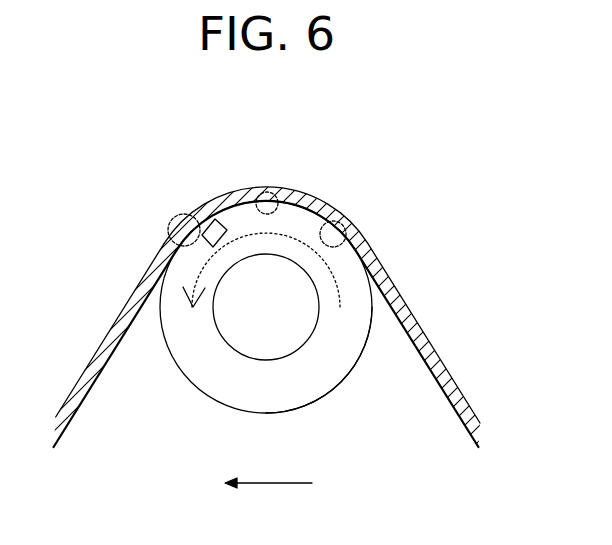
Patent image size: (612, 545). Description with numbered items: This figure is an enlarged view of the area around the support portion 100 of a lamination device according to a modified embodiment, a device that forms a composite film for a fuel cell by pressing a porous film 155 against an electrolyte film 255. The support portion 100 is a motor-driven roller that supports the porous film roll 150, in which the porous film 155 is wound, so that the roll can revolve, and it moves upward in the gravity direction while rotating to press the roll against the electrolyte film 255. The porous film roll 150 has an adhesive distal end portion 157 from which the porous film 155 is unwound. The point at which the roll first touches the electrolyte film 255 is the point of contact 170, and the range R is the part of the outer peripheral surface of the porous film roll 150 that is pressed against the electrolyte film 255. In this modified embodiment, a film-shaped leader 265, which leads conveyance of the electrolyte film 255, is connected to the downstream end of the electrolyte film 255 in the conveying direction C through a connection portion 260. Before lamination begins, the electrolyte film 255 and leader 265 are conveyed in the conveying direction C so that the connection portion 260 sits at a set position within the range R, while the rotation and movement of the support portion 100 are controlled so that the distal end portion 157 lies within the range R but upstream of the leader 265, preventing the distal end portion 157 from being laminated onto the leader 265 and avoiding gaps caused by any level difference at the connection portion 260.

The support portion 100 is at (268, 310).
The porous film roll 150 is at (212, 370).
The porous film 155 is at (343, 381).
The distal end portion 157 is at (205, 224).
The point of contact 170 is at (269, 191).
The electrolyte film 255 is at (321, 199).
The connection portion 260 is at (172, 216).
The leader 265 is at (137, 292).
The range R is at (346, 228).
The conveying direction C is at (268, 495).